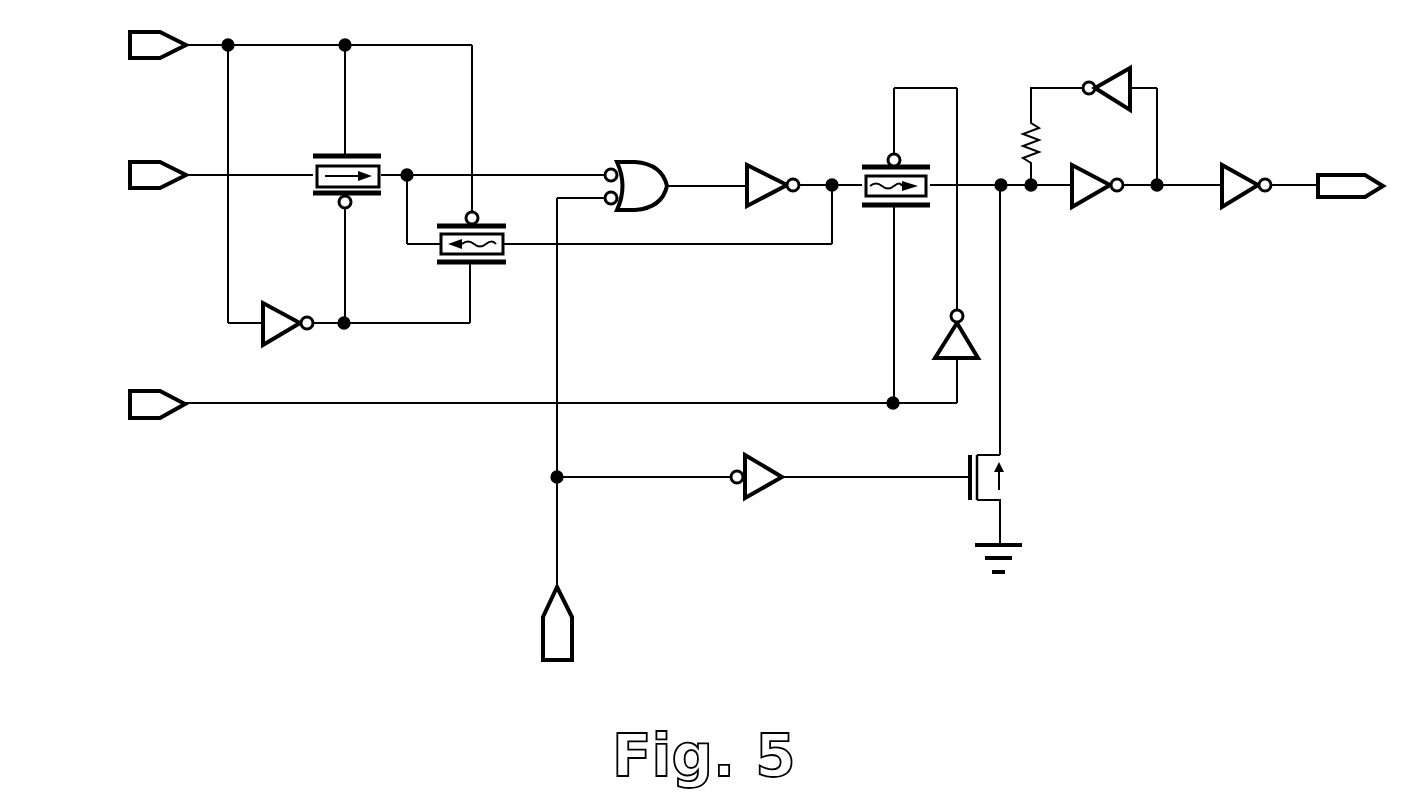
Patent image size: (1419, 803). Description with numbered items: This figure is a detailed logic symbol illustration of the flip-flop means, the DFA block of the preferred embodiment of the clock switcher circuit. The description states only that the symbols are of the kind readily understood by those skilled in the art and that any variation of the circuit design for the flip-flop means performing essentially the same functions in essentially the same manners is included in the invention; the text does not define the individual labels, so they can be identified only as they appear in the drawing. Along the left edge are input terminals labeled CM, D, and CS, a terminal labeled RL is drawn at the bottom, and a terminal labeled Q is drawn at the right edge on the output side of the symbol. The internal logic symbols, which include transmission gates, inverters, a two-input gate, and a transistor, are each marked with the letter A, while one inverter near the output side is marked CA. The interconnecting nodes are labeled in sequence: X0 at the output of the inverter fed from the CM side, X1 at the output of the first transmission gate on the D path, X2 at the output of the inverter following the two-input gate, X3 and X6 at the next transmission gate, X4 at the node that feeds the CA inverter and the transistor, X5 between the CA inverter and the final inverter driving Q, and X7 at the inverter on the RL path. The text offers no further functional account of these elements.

The clock/mode input terminal CM is at (277, 176).
The data input terminal D is at (204, 175).
The chip select input terminal CS is at (520, 403).
The reset/load input terminal RL is at (636, 449).
The output terminal Q is at (1343, 187).
The circuit element of type A (gate/inverter/transistor) A is at (767, 345).
The inverted clock node X0 is at (391, 268).
The latch input node X1 is at (493, 194).
The NOR gate output node X2 is at (682, 196).
The transmission gate input node X3 is at (865, 268).
The latch storage node X4 is at (1043, 261).
The output inverter input node X5 is at (1172, 168).
The transmission gate control node X6 is at (925, 184).
The reset inverter X7 is at (871, 453).
The latch inverter CA is at (1102, 194).